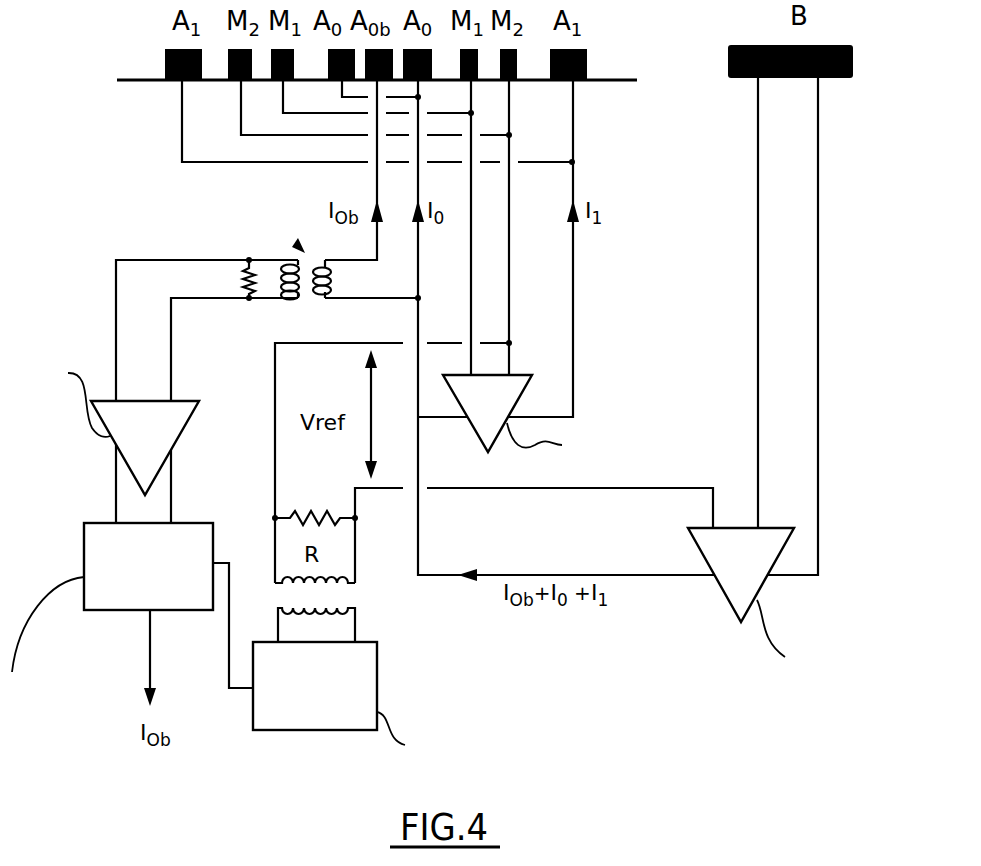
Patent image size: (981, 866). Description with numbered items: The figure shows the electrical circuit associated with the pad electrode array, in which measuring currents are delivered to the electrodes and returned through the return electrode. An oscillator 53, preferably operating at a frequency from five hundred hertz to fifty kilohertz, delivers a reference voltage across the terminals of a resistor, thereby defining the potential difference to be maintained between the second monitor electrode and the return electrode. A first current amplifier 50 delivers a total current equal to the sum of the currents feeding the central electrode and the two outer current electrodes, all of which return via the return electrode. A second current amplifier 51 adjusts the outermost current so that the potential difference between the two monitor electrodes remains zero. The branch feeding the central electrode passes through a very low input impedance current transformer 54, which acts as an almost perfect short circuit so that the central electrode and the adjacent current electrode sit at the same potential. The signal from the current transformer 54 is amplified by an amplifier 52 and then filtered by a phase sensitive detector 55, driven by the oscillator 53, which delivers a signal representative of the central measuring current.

The first current amplifier 50 is at (786, 620).
The second current amplifier 51 is at (587, 426).
The amplifier 52 is at (105, 419).
The oscillator 53 is at (394, 665).
The current transformer 54 is at (302, 247).
The phase sensitive detector 55 is at (111, 630).